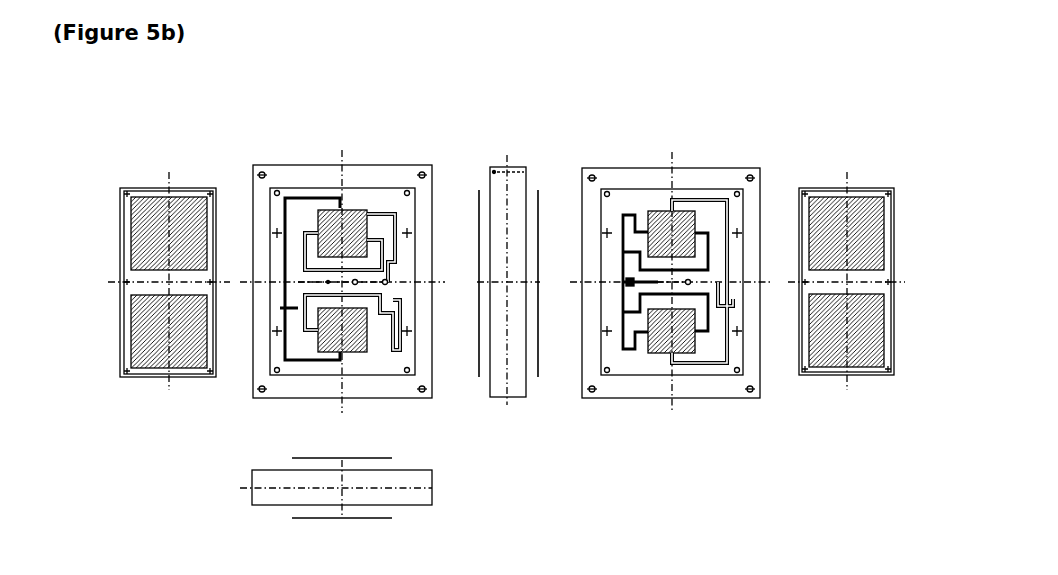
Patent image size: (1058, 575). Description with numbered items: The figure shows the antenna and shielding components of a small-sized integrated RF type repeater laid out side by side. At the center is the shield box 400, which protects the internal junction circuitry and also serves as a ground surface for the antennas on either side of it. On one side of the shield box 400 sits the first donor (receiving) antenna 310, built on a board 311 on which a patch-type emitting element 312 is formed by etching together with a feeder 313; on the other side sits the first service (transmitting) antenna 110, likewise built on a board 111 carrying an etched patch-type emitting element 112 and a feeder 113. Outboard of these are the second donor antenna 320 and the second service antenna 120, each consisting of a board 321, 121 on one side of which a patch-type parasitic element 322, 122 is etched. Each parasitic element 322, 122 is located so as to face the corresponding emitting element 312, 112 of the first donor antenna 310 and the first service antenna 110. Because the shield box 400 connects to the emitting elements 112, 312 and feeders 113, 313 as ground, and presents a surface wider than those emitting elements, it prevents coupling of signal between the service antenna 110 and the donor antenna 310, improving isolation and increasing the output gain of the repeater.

The first service (transmitting) antenna 110 is at (687, 277).
The board 111 is at (637, 362).
The emitting element 112 is at (683, 358).
The feeder 113 is at (731, 346).
The second service antenna 120 is at (869, 235).
The board 121 is at (886, 250).
The parasitic element 122 is at (850, 212).
The first donor (receiving) antenna 310 is at (356, 302).
The board 311 is at (397, 374).
The emitting element 312 is at (352, 357).
The feeder 313 is at (393, 298).
The second donor antenna 320 is at (145, 333).
The board 321 is at (131, 244).
The parasitic element 322 is at (150, 214).
The shield box 400 is at (511, 400).